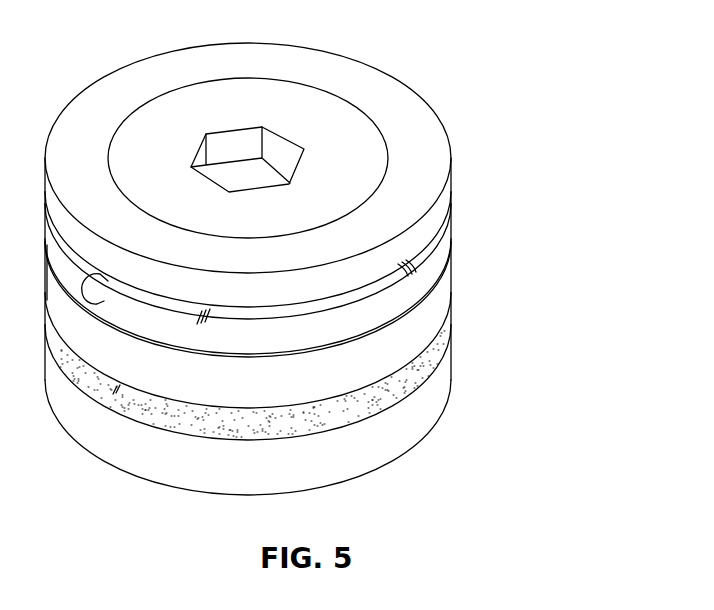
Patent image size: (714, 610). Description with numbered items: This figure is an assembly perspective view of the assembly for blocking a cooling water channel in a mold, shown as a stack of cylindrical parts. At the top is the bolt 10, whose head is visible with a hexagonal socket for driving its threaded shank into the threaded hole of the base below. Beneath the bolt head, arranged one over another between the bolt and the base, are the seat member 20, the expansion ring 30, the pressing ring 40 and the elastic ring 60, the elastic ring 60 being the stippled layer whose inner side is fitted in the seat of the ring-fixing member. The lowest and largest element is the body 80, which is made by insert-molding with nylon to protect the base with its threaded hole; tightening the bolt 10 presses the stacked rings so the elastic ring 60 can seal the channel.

The bolt 10 is at (330, 125).
The seat member 20 is at (432, 213).
The expansion ring 30 is at (428, 260).
The pressing ring 40 is at (417, 327).
The elastic ring 60 is at (410, 375).
The body 80 is at (400, 423).